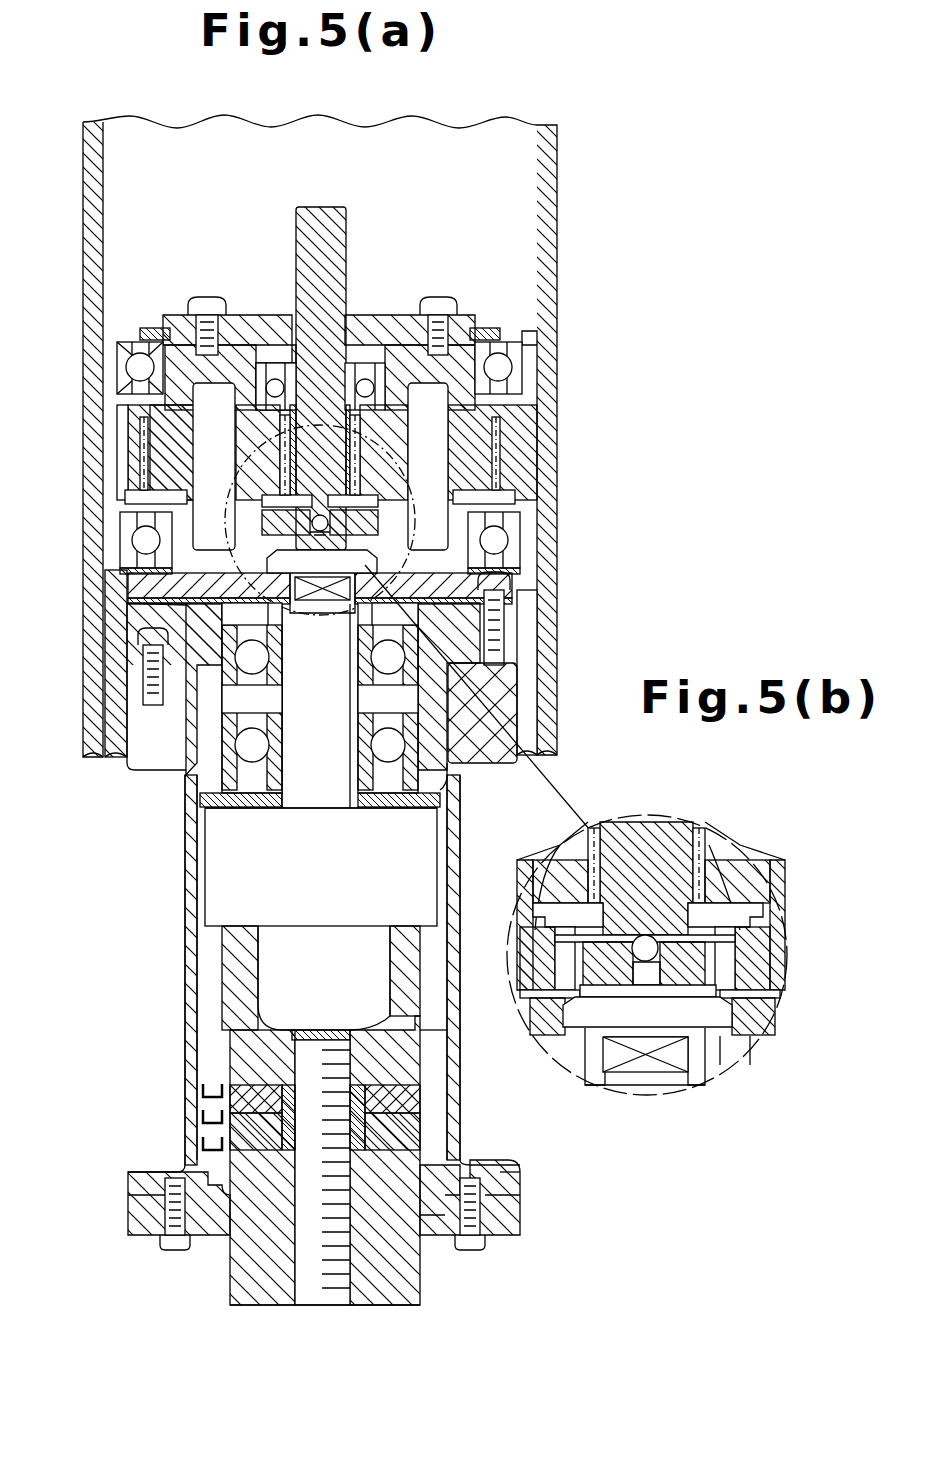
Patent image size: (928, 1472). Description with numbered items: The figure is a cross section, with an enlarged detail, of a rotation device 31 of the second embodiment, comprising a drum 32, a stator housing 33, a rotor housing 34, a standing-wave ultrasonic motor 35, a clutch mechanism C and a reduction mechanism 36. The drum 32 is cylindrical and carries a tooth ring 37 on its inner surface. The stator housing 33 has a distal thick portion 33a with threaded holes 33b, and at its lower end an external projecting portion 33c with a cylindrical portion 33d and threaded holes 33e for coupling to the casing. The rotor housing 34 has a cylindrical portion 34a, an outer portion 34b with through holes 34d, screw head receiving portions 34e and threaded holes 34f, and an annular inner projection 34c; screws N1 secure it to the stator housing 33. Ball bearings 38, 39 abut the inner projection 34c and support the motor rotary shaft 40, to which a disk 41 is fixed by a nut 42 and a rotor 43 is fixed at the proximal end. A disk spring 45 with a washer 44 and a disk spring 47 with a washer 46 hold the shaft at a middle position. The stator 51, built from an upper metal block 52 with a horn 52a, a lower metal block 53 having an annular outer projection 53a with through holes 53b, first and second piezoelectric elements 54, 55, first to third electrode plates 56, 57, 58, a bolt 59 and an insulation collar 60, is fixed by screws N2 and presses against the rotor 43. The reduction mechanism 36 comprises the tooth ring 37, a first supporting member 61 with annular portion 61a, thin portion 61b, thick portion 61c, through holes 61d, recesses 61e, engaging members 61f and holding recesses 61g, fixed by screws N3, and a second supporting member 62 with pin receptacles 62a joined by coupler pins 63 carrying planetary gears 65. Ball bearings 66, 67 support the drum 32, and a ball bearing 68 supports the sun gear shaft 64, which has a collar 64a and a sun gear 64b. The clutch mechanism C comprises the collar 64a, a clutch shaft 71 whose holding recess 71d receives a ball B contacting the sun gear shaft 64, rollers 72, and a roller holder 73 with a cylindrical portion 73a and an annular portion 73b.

In FIG. 5A, the rotation device 31 is at (643, 265).
In FIG. 5A, the drum 32 is at (553, 205).
In FIG. 5A, the stator housing 33 is at (460, 965).
In FIG. 5A, the distal thick portion 33a is at (130, 742).
In FIG. 5A, the threaded holes 33b is at (135, 700).
In FIG. 5A, the external projecting portion 33c is at (510, 1160).
In FIG. 5A, the cylindrical portion 33d is at (508, 1210).
In FIG. 5A, the threaded holes 33e is at (130, 1195).
In FIG. 5A, the rotor housing 34 is at (447, 755).
In FIG. 5A, the cylindrical portion 34a is at (452, 775).
In FIG. 5A, the outer portion 34b is at (520, 645).
In FIG. 5A, the annular inner projection 34c is at (287, 692).
In FIG. 5A, the through holes 34d is at (135, 665).
In FIG. 5A, the screw head receiving portion 34e is at (125, 610).
In FIG. 5A, the threaded holes 34f is at (520, 680).
In FIG. 5A, the ultrasonic motor 35 is at (457, 887).
In FIG. 5A, the reduction mechanism 36 is at (187, 290).
In FIG. 5A, the tooth ring 37 is at (115, 445).
In FIG. 5A, the ball bearing 38 is at (283, 660).
In FIG. 5A, the ball bearing 39 is at (283, 735).
In FIG. 5A, the motor rotary shaft 40 is at (344, 764).
In FIG. 5B, the motor rotary shaft 40 is at (650, 1092).
In FIG. 5A, the disk 41 is at (174, 634).
In FIG. 5A, the nut 42 is at (335, 615).
In FIG. 5B, the nut 42 is at (588, 1050).
In FIG. 5A, the rotor 43 is at (327, 874).
In FIG. 5A, the washer 44 is at (320, 625).
In FIG. 5A, the disk spring 45 is at (442, 686).
In FIG. 5A, the washer 46 is at (283, 792).
In FIG. 5A, the disk spring 47 is at (262, 812).
In FIG. 5A, the stator 51 is at (460, 1032).
In FIG. 5A, the upper metal block 52 is at (420, 1055).
In FIG. 5A, the horn 52a is at (260, 955).
In FIG. 5A, the lower metal block 53 is at (415, 1285).
In FIG. 5A, the annular outer projection 53a is at (440, 1225).
In FIG. 5A, the through holes 53b is at (163, 1215).
In FIG. 5A, the first piezoelectric element 54 is at (422, 1090).
In FIG. 5A, the second piezoelectric element 55 is at (422, 1130).
In FIG. 5A, the first electrode plate 56 is at (222, 1086).
In FIG. 5A, the second electrode plate 57 is at (222, 1112).
In FIG. 5A, the third electrode plate 58 is at (222, 1139).
In FIG. 5A, the bolt 59 is at (335, 1290).
In FIG. 5A, the insulation collar 60 is at (290, 1152).
In FIG. 5A, the first supporting member 61 is at (525, 560).
In FIG. 5B, the first supporting member 61 is at (770, 1020).
In FIG. 5A, the annular portion 61a is at (125, 596).
In FIG. 5A, the thin portion 61b is at (115, 556).
In FIG. 5A, the thick portion 61c is at (120, 535).
In FIG. 5A, the through holes 61d is at (505, 600).
In FIG. 5A, the recesses 61e is at (555, 510).
In FIG. 5B, the recesses 61e is at (770, 995).
In FIG. 5A, the engaging member 61f is at (175, 482).
In FIG. 5B, the engaging member 61f is at (545, 905).
In FIG. 5B, the holding recess 61g is at (525, 1005).
In FIG. 5A, the second supporting member 62 is at (458, 310).
In FIG. 5A, the pin receptacles 62a is at (243, 362).
In FIG. 5A, the coupler pins 63 is at (203, 433).
In FIG. 5A, the sun gear shaft 64 is at (322, 207).
In FIG. 5B, the sun gear shaft 64 is at (668, 802).
In FIG. 5A, the collar 64a is at (358, 460).
In FIG. 5B, the collar 64a is at (558, 850).
In FIG. 5A, the sun gear 64b is at (282, 430).
In FIG. 5B, the sun gear 64b is at (590, 828).
In FIG. 5A, the planetary gears 65 is at (115, 412).
In FIG. 5B, the planetary gears 65 is at (760, 870).
In FIG. 5A, the ball bearing 66 is at (175, 492).
In FIG. 5A, the ball bearing 67 is at (105, 365).
In FIG. 5A, the ball bearing 68 is at (362, 385).
In FIG. 5B, the clutch shaft 71 is at (647, 1012).
In FIG. 5B, the holding recess 71d is at (710, 830).
In FIG. 5B, the rollers 72 is at (722, 860).
In FIG. 5B, the roller holder 73 is at (806, 1114).
In FIG. 5B, the cylindrical portion 73a is at (735, 1060).
In FIG. 5B, the annular portion 73b is at (778, 1060).
In FIG. 5B, the ball B is at (648, 935).
In FIG. 5A, the clutch mechanism C is at (312, 494).
In FIG. 5B, the clutch mechanism C is at (631, 920).
In FIG. 5A, the screws N1 is at (140, 643).
In FIG. 5A, the screws N2 is at (175, 1250).
In FIG. 5A, the screws N3 is at (505, 580).